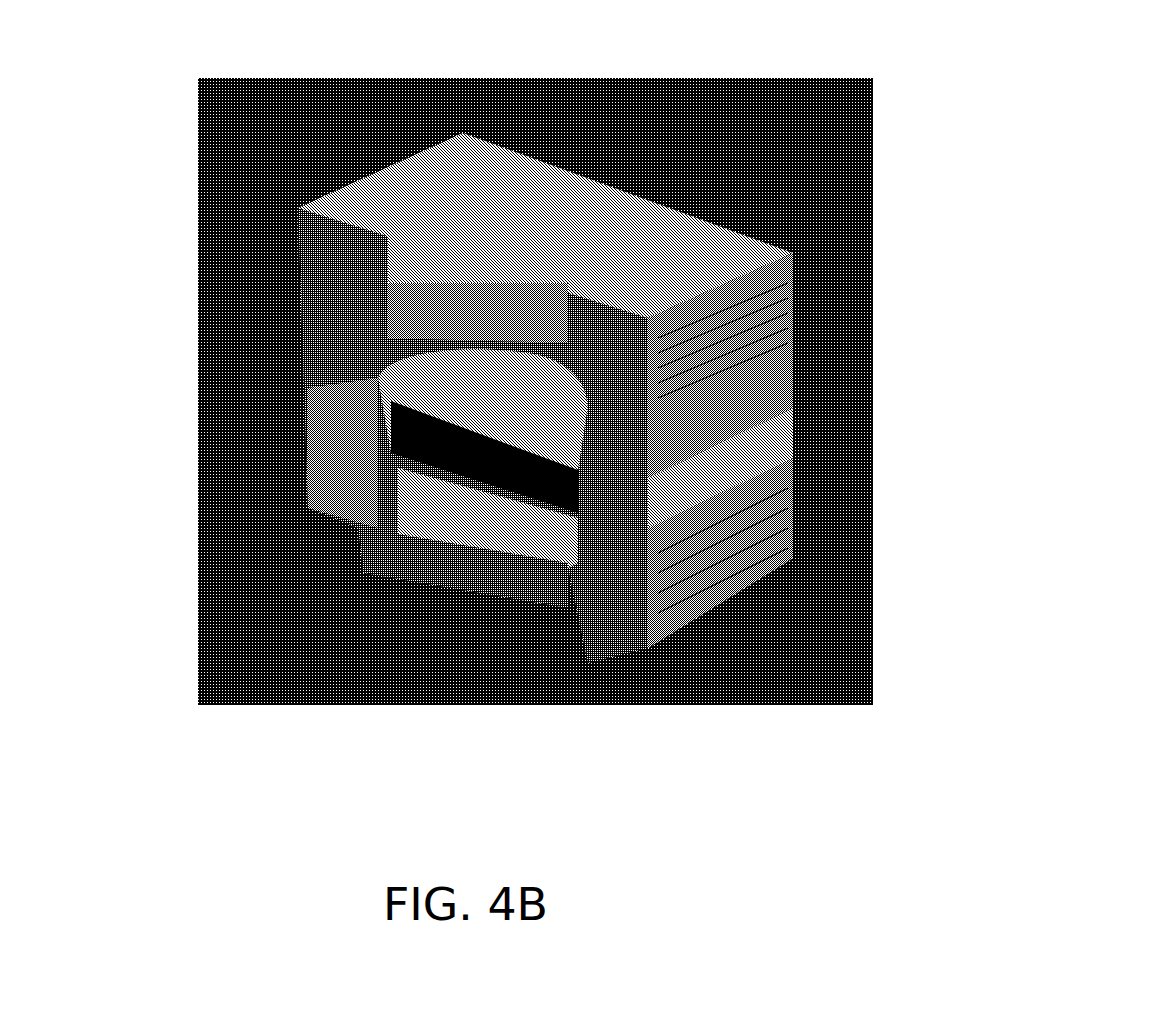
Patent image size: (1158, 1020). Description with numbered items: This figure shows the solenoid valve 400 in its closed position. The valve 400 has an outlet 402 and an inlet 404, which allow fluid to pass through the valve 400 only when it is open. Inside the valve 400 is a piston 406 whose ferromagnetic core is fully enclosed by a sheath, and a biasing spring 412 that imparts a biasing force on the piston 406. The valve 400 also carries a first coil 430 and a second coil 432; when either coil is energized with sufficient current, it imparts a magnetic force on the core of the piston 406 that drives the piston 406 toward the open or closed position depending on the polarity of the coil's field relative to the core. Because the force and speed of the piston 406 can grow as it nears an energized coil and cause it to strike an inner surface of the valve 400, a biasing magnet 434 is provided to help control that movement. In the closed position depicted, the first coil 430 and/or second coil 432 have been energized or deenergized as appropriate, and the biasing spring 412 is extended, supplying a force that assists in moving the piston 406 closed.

The valve 400 is at (1032, 86).
The outlet 402 is at (707, 487).
The inlet 404 is at (509, 544).
The piston 406 is at (590, 471).
The biasing spring 412 is at (562, 376).
The first coil 430 is at (742, 336).
The second coil 432 is at (718, 574).
The biasing magnet 434 is at (552, 248).